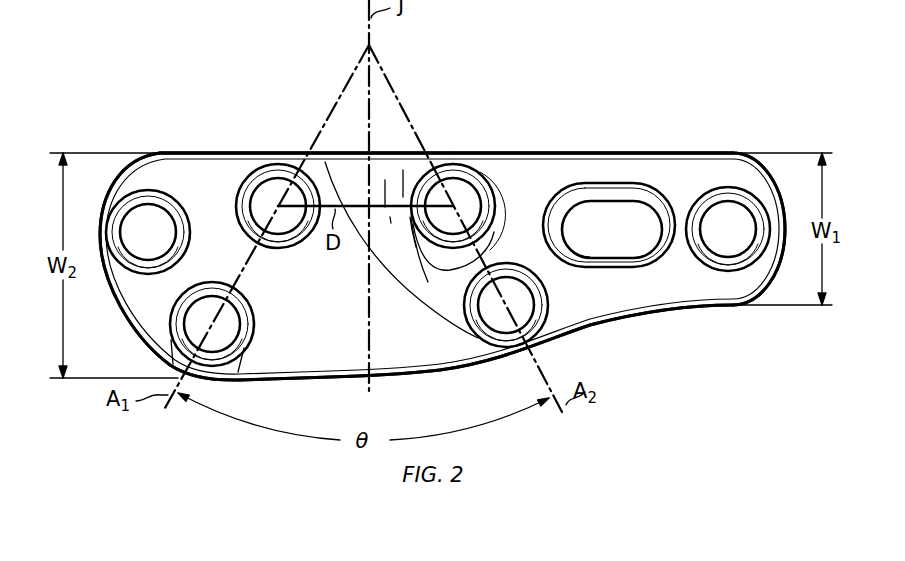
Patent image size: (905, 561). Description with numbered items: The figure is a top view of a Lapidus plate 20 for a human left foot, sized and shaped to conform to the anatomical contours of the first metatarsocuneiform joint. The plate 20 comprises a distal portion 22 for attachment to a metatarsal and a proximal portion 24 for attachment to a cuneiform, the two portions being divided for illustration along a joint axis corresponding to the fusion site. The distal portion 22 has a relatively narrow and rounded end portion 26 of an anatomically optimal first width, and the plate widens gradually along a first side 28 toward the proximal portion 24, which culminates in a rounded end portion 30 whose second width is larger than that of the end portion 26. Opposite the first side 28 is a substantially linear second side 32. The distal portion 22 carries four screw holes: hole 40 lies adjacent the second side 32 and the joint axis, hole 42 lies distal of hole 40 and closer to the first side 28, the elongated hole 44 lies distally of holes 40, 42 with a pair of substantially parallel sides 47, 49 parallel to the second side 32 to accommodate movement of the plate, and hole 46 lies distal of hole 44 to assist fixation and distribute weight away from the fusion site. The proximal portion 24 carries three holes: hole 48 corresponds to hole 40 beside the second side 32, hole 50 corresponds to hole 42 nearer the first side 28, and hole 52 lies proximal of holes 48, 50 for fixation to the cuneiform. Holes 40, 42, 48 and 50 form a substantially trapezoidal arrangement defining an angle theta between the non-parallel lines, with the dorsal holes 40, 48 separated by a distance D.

The Lapidus plate 20 is at (166, 121).
The distal portion 22 is at (686, 149).
The proximal portion 24 is at (225, 148).
The end portion 26 is at (786, 226).
The first side 28 is at (460, 369).
The end portion 30 is at (99, 236).
The second side 32 is at (543, 153).
The hole 40 is at (495, 192).
The hole 42 is at (549, 302).
The hole 44 is at (663, 256).
The hole 46 is at (701, 197).
The side 47 is at (617, 203).
The hole 48 is at (288, 250).
The side 49 is at (603, 253).
The hole 50 is at (255, 325).
The hole 52 is at (190, 236).